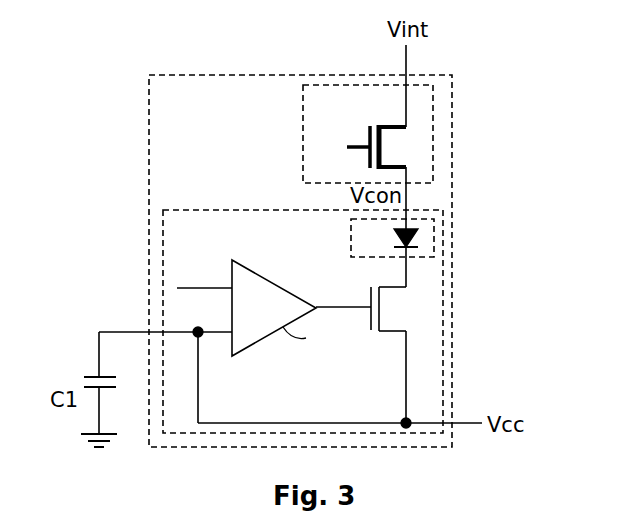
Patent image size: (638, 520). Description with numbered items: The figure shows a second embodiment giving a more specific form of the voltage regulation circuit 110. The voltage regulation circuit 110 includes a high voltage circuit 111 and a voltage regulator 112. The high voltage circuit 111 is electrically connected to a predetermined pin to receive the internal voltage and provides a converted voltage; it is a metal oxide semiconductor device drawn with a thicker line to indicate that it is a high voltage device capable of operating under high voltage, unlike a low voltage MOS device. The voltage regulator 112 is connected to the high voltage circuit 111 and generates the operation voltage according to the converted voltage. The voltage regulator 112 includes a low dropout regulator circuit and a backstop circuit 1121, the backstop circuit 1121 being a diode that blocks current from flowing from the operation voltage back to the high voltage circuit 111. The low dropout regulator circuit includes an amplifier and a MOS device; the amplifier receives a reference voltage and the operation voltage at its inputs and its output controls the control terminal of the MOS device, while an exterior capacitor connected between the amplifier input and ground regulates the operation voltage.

The voltage regulation circuit 110 is at (203, 115).
The high voltage circuit 111 is at (352, 119).
The voltage regulator 112 is at (217, 243).
The backstop circuit 1121 is at (435, 233).